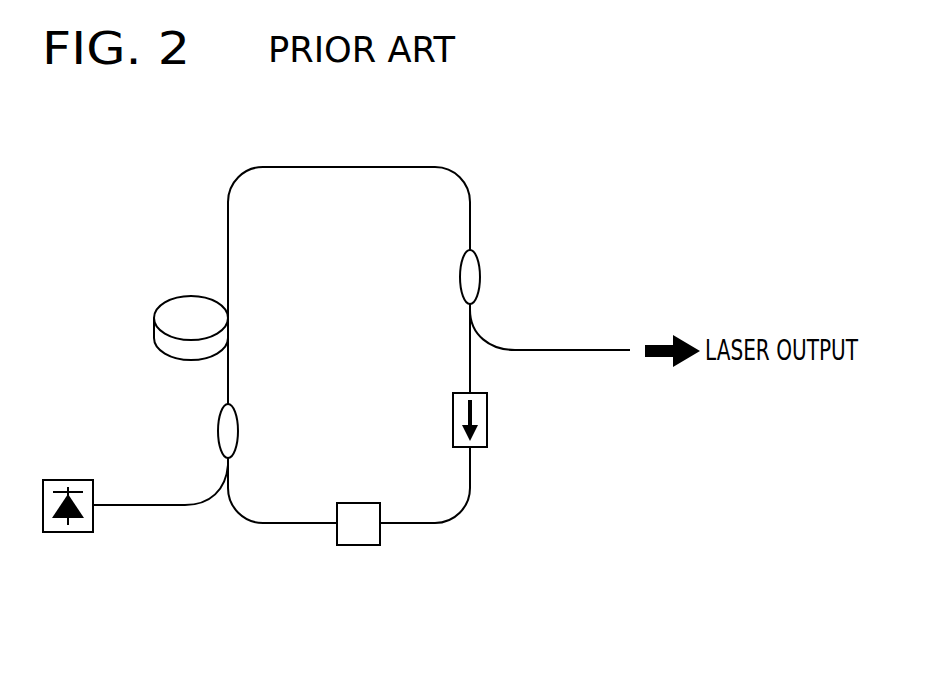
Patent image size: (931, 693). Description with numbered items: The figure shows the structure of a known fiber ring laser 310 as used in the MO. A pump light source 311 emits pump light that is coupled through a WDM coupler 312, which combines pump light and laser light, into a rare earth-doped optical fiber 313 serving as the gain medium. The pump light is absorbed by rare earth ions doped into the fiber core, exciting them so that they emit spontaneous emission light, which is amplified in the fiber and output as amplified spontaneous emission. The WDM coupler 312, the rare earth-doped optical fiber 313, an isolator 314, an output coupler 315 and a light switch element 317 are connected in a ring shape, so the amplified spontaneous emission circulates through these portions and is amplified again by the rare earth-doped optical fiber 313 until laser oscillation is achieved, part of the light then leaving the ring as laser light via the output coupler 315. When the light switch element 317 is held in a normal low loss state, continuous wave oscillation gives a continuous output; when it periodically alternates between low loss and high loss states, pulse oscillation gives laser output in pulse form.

The fiber ring laser 310 is at (492, 181).
The pump light source 311 is at (68, 479).
The WDM coupler 312 is at (220, 432).
The rare earth-doped optical fiber 313 is at (155, 330).
The isolator 314 is at (488, 412).
The output coupler 315 is at (480, 276).
The light switch element 317 is at (362, 546).